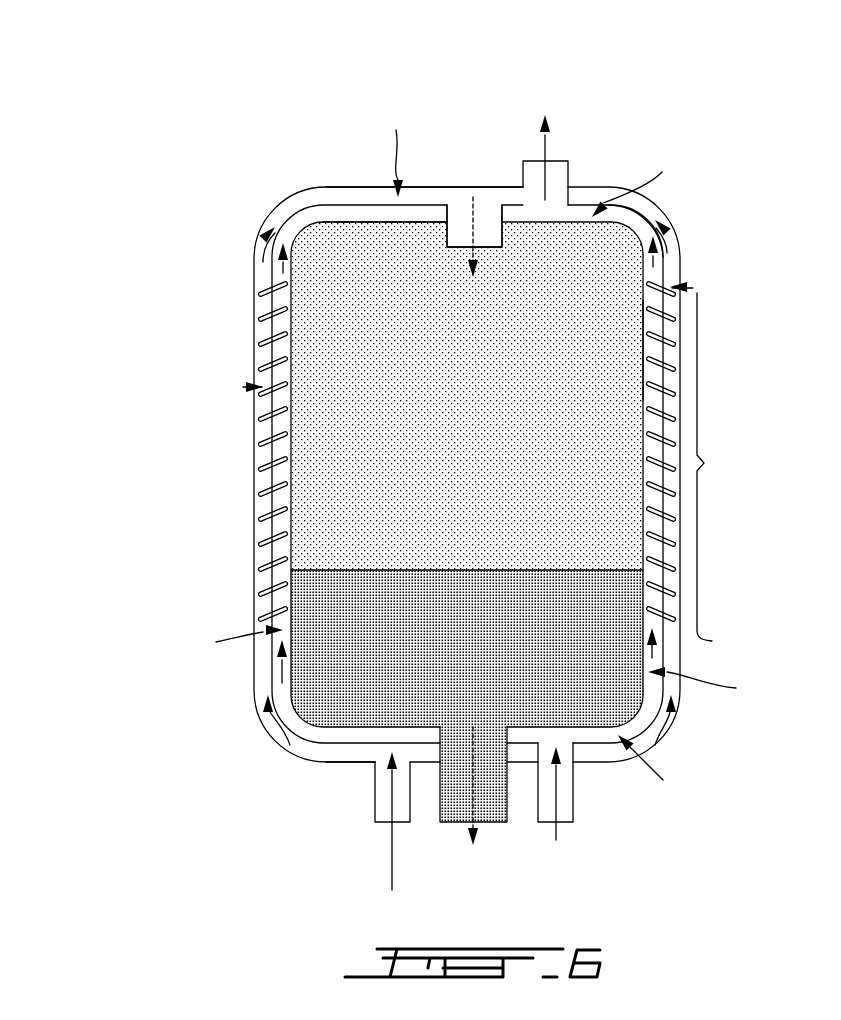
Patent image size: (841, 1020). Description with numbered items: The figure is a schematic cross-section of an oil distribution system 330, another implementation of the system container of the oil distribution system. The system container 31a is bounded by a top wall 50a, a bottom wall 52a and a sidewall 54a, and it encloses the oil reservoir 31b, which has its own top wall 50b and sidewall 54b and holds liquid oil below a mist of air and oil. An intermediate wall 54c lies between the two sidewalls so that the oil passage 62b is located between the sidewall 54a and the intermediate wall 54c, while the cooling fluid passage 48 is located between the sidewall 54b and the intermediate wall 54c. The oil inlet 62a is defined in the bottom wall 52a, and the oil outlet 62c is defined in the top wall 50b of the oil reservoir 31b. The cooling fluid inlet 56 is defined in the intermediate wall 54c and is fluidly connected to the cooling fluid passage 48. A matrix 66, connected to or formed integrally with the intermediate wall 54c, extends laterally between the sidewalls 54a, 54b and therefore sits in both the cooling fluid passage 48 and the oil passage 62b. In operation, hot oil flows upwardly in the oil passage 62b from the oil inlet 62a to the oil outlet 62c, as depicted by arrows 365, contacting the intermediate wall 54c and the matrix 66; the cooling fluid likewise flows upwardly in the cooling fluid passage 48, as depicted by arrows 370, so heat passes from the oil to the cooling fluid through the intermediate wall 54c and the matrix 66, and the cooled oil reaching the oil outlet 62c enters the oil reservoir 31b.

The oil distribution system 330 is at (445, 483).
The cooling fluid passage 48 is at (470, 401).
The top wall 50a is at (337, 186).
The top wall 50b is at (372, 224).
The bottom wall 52a is at (345, 763).
The sidewall 54a is at (254, 337).
The sidewall 54b is at (292, 347).
The intermediate wall 54c is at (288, 380).
The system container 31a is at (660, 212).
The oil reservoir 31b is at (643, 345).
The cooling fluid inlet 56 is at (575, 797).
The oil inlet 62a is at (375, 800).
The oil passage 62b is at (243, 387).
The oil outlet 62c is at (445, 250).
The matrix 66 is at (262, 462).
The arrows 365 is at (473, 197).
The arrows 370 is at (547, 150).